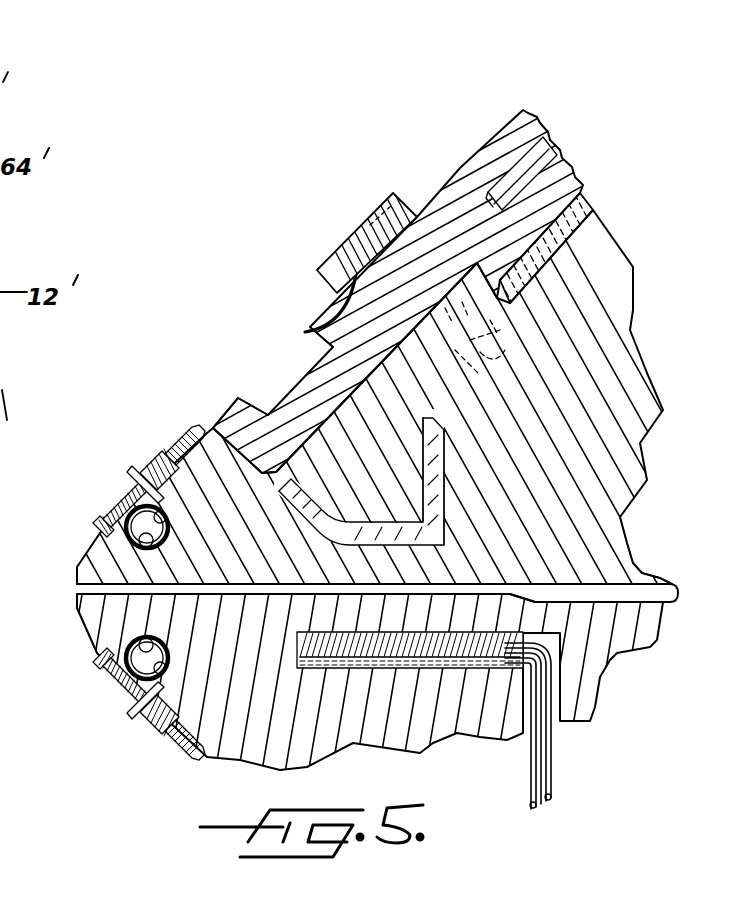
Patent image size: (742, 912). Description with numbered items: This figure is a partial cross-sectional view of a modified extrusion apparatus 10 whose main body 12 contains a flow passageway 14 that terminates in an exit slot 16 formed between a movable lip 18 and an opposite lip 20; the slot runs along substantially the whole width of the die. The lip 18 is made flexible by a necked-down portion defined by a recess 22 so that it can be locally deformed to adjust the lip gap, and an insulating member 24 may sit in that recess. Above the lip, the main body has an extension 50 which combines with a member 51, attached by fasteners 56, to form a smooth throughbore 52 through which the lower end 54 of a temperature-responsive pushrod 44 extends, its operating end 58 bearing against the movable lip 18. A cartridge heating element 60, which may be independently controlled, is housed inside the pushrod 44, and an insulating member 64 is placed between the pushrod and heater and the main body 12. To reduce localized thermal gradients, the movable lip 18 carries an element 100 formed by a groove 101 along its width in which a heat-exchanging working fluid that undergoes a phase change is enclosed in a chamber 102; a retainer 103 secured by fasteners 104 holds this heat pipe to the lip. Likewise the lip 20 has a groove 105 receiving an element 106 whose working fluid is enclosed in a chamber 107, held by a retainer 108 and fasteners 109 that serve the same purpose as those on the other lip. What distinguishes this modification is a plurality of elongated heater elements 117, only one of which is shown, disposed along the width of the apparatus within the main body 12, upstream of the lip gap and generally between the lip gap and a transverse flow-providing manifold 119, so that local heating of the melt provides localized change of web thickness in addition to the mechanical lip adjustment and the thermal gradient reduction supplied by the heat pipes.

The extrusion apparatus 10 is at (407, 168).
The main body 12 is at (631, 324).
The flow passageway 14 is at (423, 588).
The exit slot 16 is at (80, 593).
The lip 18 is at (78, 567).
The lip 20 is at (90, 617).
The recess 22 is at (421, 460).
The insulating member 24 is at (352, 534).
The temperature-responsive pushrod 44 is at (472, 154).
The extension 50 is at (400, 404).
The member 51 is at (332, 268).
The smooth throughbore 52 is at (318, 330).
The lower end of pushrod 54 is at (323, 307).
The fasteners 56 is at (377, 217).
The operating end of pushrod 58 is at (210, 424).
The cartridge heating element 60 is at (548, 145).
The insulating member 64 is at (590, 205).
The element for reducing localized thermal gradients 100 is at (103, 510).
The groove 101 is at (173, 508).
The chamber 102 is at (180, 563).
The retainer 103 is at (112, 508).
The fasteners 104 is at (147, 453).
The groove 105 is at (147, 623).
The element 106 is at (100, 660).
The chamber 107 is at (160, 647).
The retainer 108 is at (135, 712).
The fasteners 109 is at (153, 733).
The elongated heater elements 117 is at (395, 670).
The transverse flow-providing manifold 119 is at (617, 573).